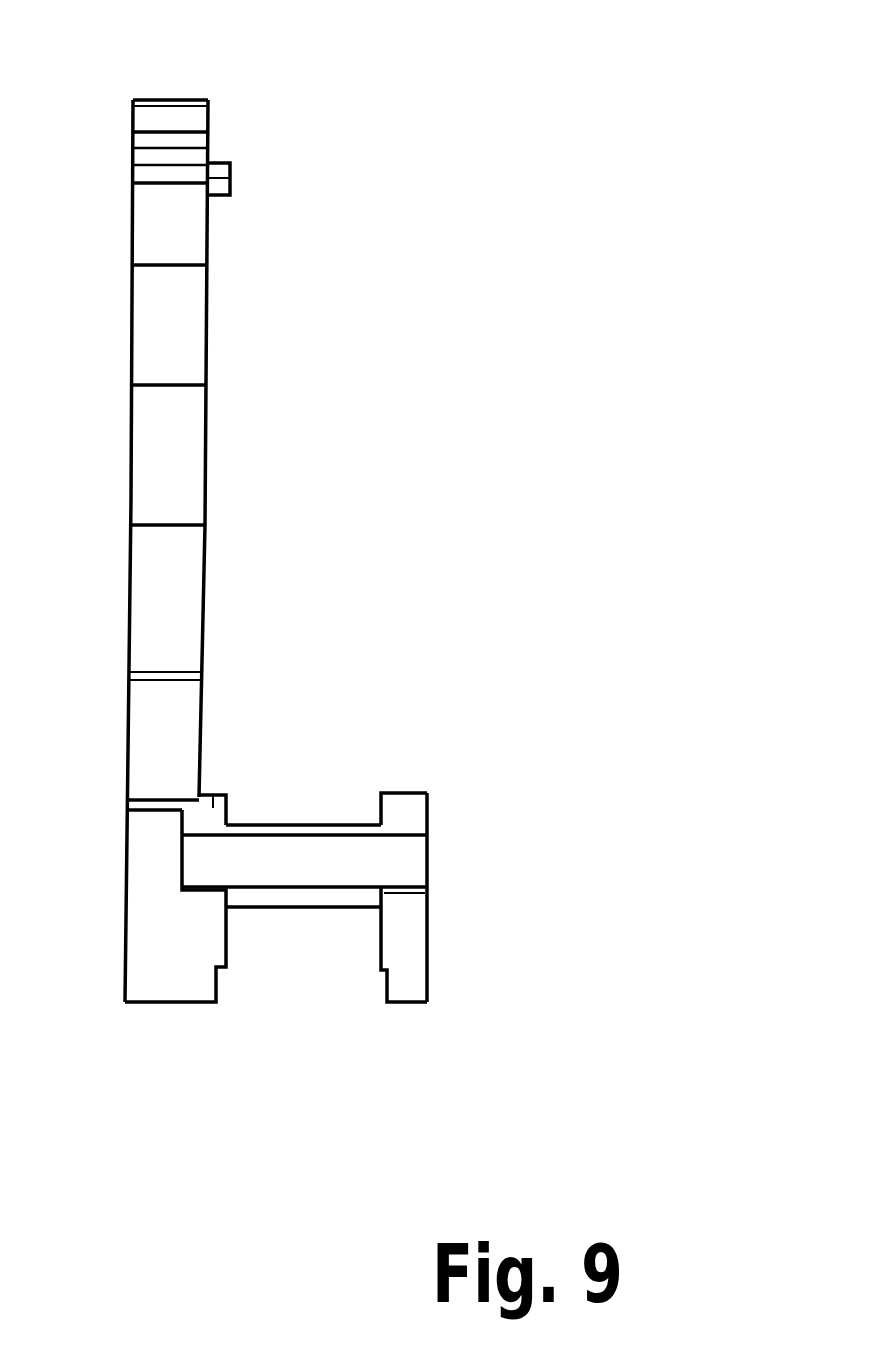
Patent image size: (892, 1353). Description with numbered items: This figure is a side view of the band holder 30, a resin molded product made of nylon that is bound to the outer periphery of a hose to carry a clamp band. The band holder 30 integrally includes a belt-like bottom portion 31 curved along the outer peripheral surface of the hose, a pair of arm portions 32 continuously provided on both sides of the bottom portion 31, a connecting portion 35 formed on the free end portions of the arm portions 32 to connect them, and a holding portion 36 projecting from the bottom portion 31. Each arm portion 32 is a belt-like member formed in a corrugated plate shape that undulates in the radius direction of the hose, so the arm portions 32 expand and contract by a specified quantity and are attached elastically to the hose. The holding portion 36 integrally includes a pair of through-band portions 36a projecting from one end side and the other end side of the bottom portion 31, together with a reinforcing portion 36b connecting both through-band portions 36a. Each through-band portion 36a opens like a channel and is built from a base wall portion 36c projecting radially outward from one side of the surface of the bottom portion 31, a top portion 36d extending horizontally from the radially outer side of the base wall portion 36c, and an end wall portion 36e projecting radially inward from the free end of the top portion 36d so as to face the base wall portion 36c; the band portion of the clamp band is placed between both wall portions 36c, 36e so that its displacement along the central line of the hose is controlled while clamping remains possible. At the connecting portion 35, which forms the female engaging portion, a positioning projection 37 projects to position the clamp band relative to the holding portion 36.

The band holder 30 is at (385, 120).
The bottom portion 31 is at (155, 987).
The arm portion 32 is at (182, 333).
The connecting portion 35 is at (160, 115).
The holding portion 36 is at (438, 874).
The through-band portion 36a is at (302, 824).
The reinforcing portion 36b is at (402, 990).
The base wall portion 36c is at (215, 797).
The top portion 36d is at (290, 873).
The end wall portion 36e is at (398, 803).
The positioning projection 37 is at (231, 184).